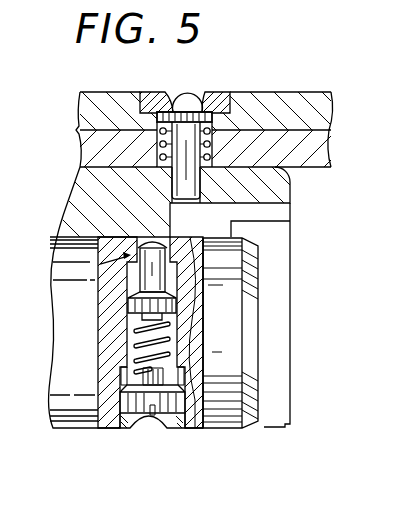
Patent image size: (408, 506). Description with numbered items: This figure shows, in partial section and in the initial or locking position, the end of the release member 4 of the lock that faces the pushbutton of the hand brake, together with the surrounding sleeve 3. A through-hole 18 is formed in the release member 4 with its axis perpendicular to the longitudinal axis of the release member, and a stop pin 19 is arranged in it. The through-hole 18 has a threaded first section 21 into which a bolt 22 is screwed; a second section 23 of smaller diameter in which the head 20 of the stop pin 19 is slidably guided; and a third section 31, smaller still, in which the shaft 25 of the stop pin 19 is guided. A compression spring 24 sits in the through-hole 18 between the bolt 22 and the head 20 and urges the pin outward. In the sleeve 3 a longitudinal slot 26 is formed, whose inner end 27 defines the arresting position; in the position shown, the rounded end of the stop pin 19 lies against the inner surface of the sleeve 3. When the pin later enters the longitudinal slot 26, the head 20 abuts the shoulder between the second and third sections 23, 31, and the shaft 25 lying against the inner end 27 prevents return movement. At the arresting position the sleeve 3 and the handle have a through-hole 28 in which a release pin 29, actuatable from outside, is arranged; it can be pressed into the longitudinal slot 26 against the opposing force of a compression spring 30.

The sleeve 3 is at (83, 205).
The release member 4 is at (222, 430).
The through-hole 18 is at (203, 304).
The stop pin 19 is at (244, 277).
The head 20 is at (127, 312).
The first section 21 is at (119, 374).
The bolt 22 is at (142, 426).
The second section 23 is at (125, 343).
The compression spring 24 is at (203, 338).
The shaft 25 is at (113, 286).
The longitudinal slot 26 is at (281, 212).
The inner end 27 is at (177, 218).
The through-hole 28 is at (131, 124).
The release pin 29 is at (183, 130).
The compression spring 30 is at (217, 150).
The third section 31 is at (72, 234).